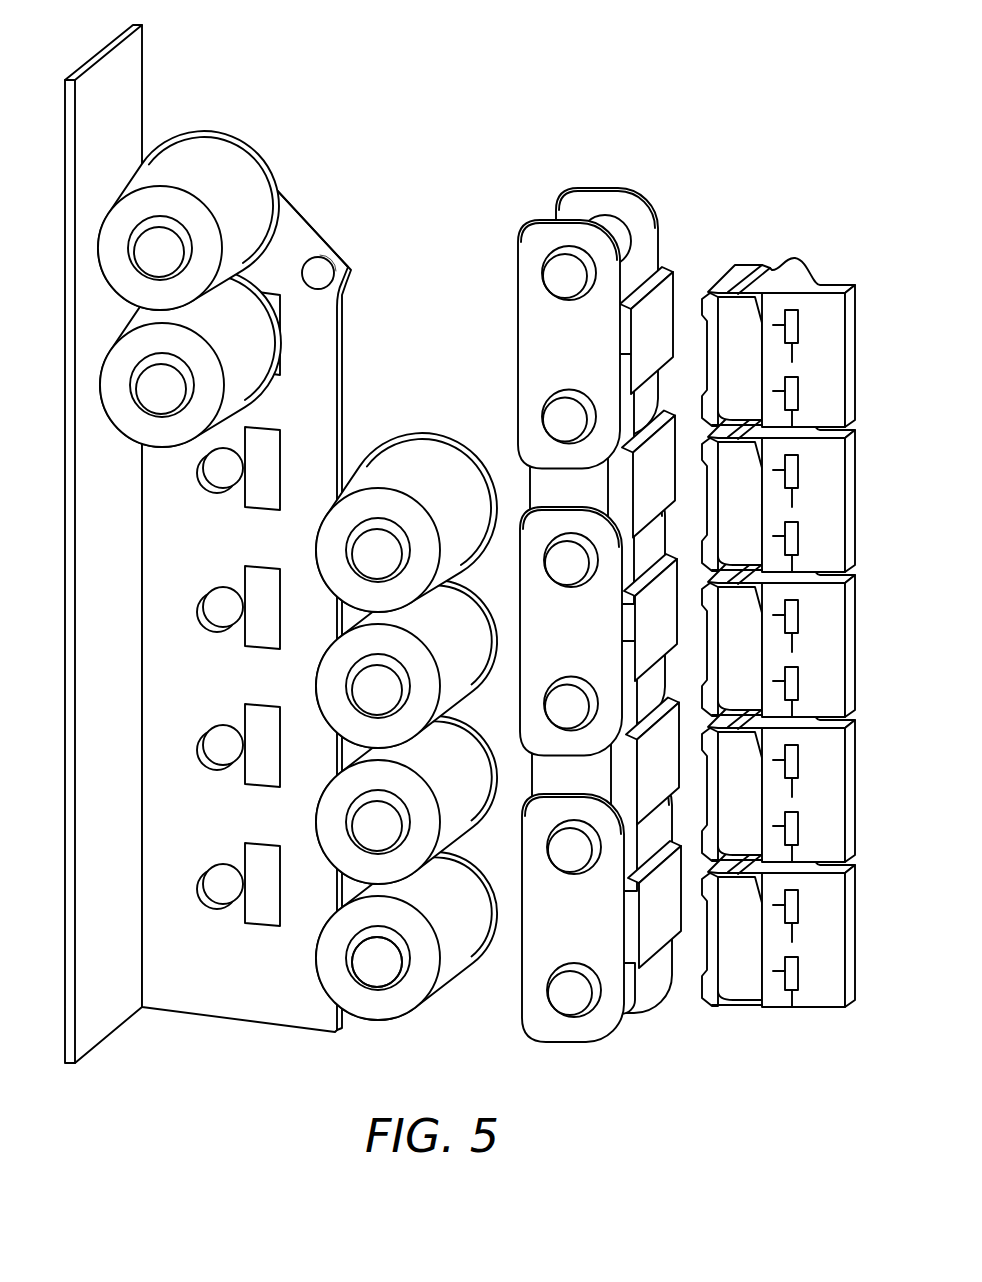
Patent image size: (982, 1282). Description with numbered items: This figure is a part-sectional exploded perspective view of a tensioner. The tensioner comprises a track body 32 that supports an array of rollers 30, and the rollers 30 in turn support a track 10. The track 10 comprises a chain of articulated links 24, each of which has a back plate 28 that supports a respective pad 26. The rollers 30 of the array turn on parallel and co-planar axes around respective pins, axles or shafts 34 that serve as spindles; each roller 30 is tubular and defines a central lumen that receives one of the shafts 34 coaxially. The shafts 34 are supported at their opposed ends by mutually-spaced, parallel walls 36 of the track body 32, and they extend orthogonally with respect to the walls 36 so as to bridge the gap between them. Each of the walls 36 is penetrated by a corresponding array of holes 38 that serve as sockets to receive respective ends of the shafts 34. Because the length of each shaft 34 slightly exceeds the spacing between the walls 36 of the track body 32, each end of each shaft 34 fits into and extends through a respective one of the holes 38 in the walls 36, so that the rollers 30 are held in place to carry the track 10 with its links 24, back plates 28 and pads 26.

The track 10 is at (613, 152).
The articulated link 24 is at (527, 240).
The pad 26 is at (796, 260).
The back plate 28 is at (671, 289).
The roller 30 is at (110, 381).
The track body 32 is at (100, 54).
The shaft 34 is at (373, 988).
The wall 36 is at (262, 1012).
The hole 38 is at (216, 629).